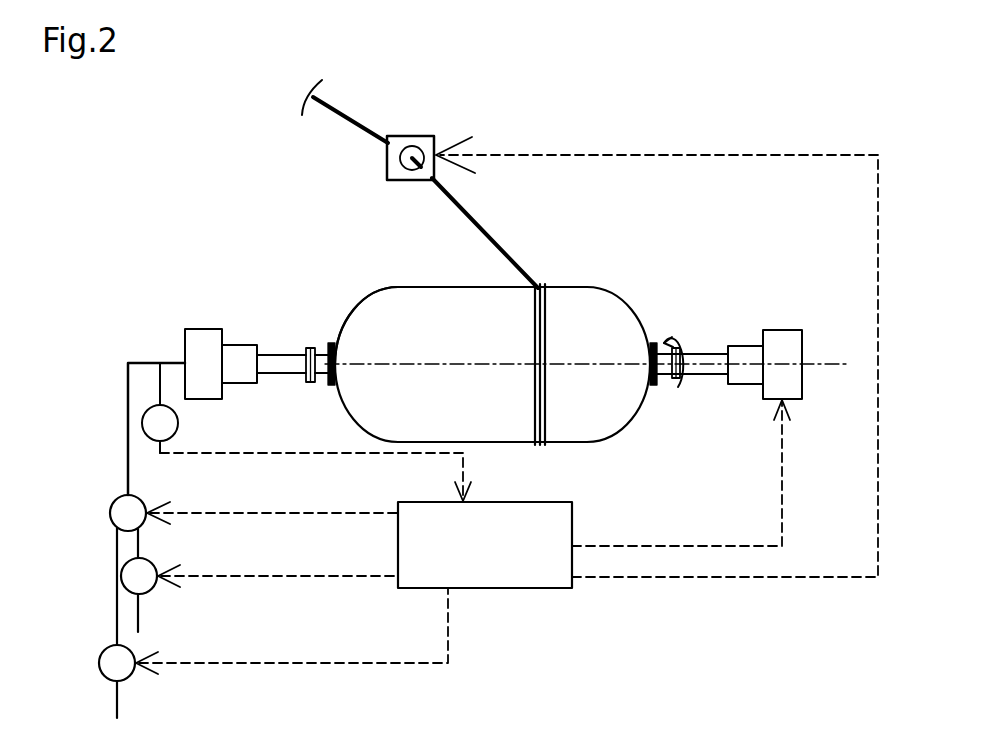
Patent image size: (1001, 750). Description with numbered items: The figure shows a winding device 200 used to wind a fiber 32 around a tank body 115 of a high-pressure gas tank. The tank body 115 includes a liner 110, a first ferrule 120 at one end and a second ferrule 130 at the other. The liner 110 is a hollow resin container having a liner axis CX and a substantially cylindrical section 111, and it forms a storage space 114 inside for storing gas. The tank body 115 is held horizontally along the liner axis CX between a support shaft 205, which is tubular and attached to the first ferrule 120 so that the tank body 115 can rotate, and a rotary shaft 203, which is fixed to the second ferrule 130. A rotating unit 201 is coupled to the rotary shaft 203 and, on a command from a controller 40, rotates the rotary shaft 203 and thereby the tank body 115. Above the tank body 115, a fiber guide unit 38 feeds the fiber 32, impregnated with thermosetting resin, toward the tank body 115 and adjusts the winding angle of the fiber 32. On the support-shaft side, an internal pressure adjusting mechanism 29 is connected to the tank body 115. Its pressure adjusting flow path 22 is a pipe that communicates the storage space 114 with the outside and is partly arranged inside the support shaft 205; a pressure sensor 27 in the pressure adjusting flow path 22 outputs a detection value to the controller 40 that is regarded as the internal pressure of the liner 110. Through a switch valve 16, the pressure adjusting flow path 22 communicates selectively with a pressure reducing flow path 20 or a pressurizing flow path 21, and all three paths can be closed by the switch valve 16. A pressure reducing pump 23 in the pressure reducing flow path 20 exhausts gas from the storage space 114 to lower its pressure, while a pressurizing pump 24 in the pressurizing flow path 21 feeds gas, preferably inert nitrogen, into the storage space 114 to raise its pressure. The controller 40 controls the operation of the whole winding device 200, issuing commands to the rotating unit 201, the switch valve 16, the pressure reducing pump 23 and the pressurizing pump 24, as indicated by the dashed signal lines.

The winding device 200 is at (178, 158).
The liner 110 is at (565, 287).
The cylindrical section 111 is at (512, 444).
The storage space 114 is at (472, 298).
The tank body 115 is at (398, 286).
The first ferrule 120 is at (332, 342).
The second ferrule 130 is at (653, 343).
The rotating unit 201 is at (785, 330).
The rotary shaft 203 is at (702, 378).
The support shaft 205 is at (238, 345).
The liner axis CX is at (833, 358).
The fiber guide unit 38 is at (408, 136).
The fiber 32 is at (468, 210).
The controller 40 is at (560, 502).
The internal pressure adjusting mechanism 29 is at (105, 390).
The pressure adjusting flow path 22 is at (127, 428).
The pressure sensor 27 is at (179, 422).
The switch valve 16 is at (137, 495).
The pressure reducing flow path 20 is at (116, 617).
The pressurizing flow path 21 is at (139, 617).
The pressurizing pump 24 is at (152, 558).
The pressure reducing pump 23 is at (101, 673).